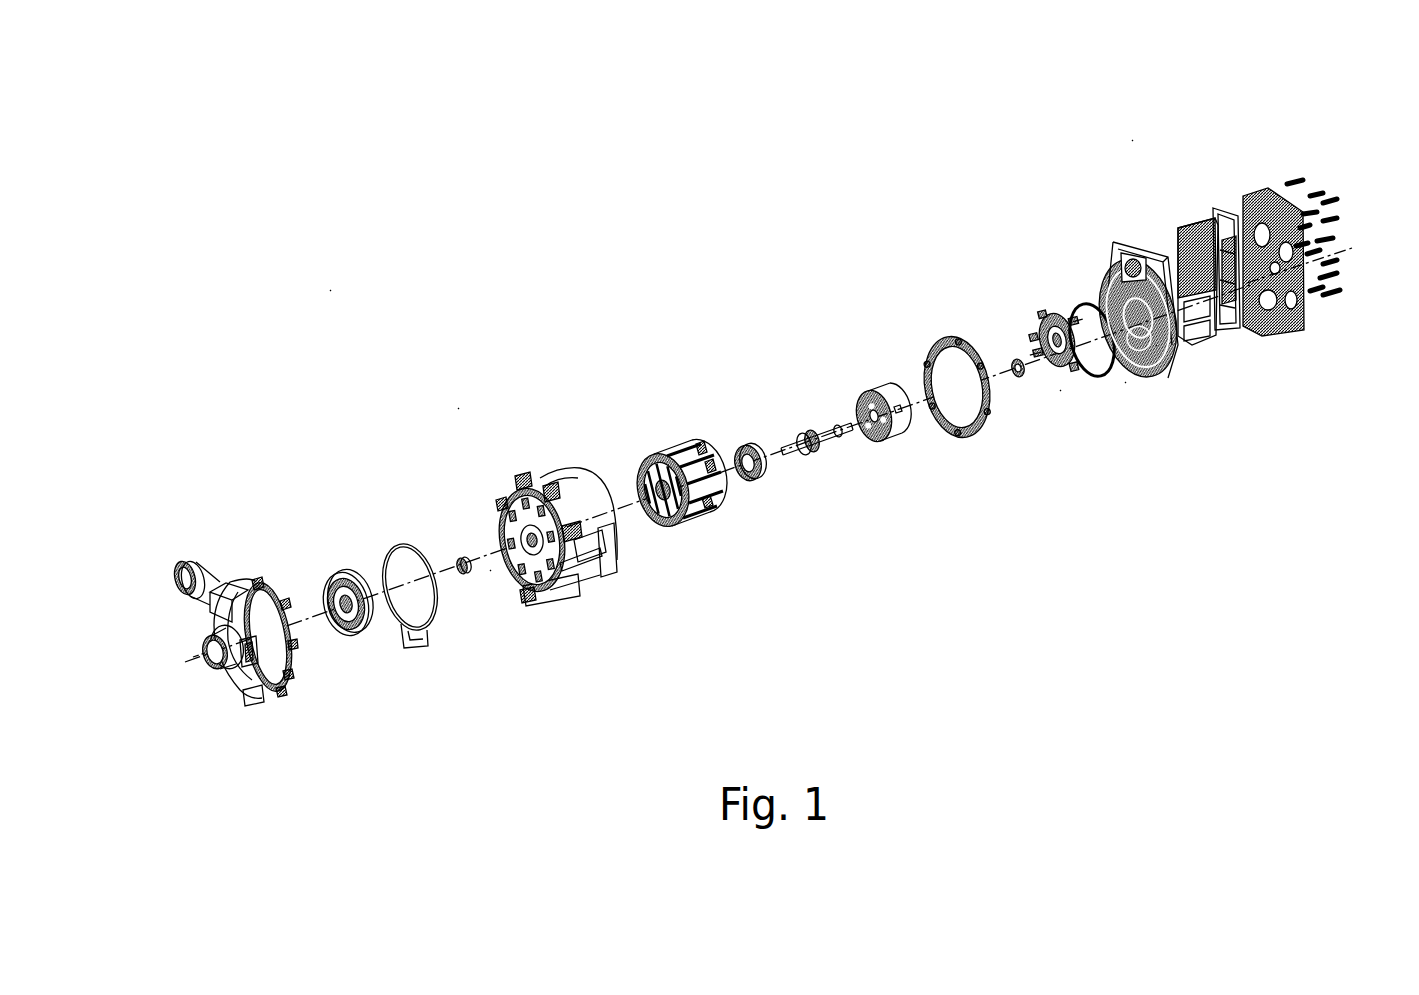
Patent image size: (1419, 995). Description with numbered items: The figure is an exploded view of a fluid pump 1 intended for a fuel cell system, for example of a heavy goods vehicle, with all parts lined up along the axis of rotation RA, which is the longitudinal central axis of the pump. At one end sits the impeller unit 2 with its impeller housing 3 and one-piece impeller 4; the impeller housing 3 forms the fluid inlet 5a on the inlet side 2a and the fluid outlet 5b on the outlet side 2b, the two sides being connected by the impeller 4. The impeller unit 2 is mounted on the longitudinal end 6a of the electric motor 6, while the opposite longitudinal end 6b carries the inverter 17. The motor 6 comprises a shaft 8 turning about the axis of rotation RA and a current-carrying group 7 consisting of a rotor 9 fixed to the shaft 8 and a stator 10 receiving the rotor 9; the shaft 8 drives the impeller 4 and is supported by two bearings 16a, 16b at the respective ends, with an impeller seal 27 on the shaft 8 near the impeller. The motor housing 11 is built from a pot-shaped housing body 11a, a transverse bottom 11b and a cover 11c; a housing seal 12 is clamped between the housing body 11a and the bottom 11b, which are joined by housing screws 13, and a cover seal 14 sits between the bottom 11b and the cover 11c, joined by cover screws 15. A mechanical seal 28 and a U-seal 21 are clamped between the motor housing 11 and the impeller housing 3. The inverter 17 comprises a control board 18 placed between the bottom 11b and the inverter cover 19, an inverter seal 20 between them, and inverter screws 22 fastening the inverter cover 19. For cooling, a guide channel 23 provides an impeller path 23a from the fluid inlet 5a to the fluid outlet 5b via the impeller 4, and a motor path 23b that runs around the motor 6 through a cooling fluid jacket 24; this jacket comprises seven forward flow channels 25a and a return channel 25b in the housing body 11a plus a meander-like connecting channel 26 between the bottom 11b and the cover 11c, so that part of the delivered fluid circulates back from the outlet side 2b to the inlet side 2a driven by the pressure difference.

The fluid pump 1 is at (338, 296).
The impeller unit 2 is at (379, 485).
The inlet side 2a is at (208, 672).
The outlet side 2b is at (170, 581).
The impeller housing 3 is at (255, 578).
The impeller 4 is at (347, 560).
The fluid inlet 5a is at (171, 684).
The fluid outlet 5b is at (163, 599).
The electric motor 6 is at (1120, 157).
The longitudinal end 6a is at (492, 576).
The longitudinal end 6b is at (1127, 386).
The group 7 is at (664, 452).
The shaft 8 is at (813, 430).
The rotor 9 is at (876, 392).
The stator 10 is at (678, 447).
The motor housing 11 is at (549, 545).
The housing body 11a is at (543, 470).
The bottom 11b is at (1108, 284).
The cover 11c is at (1053, 314).
The housing seal 12 is at (966, 446).
The housing screws 13 is at (1338, 304).
The cover seal 14 is at (1104, 366).
The cover screws 15 is at (1063, 394).
The bearing 16a is at (752, 485).
The bearing 16b is at (1015, 358).
The inverter 17 is at (1329, 88).
The control board 18 is at (1188, 221).
The inverter cover 19 is at (1256, 186).
The inverter seal 20 is at (1216, 198).
The U-seal 21 is at (416, 656).
The inverter screws 22 is at (1330, 190).
The guide channel 23 is at (288, 736).
The impeller path 23a is at (277, 682).
The motor path 23b is at (588, 552).
The cooling fluid jacket 24 is at (715, 587).
The forward flow channels 25a is at (715, 587).
The return channel 25b is at (715, 587).
The connecting channel 26 is at (1160, 352).
The impeller seal 27 is at (460, 552).
The mechanical seal 28 is at (397, 624).
The axis of rotation RA is at (1362, 264).